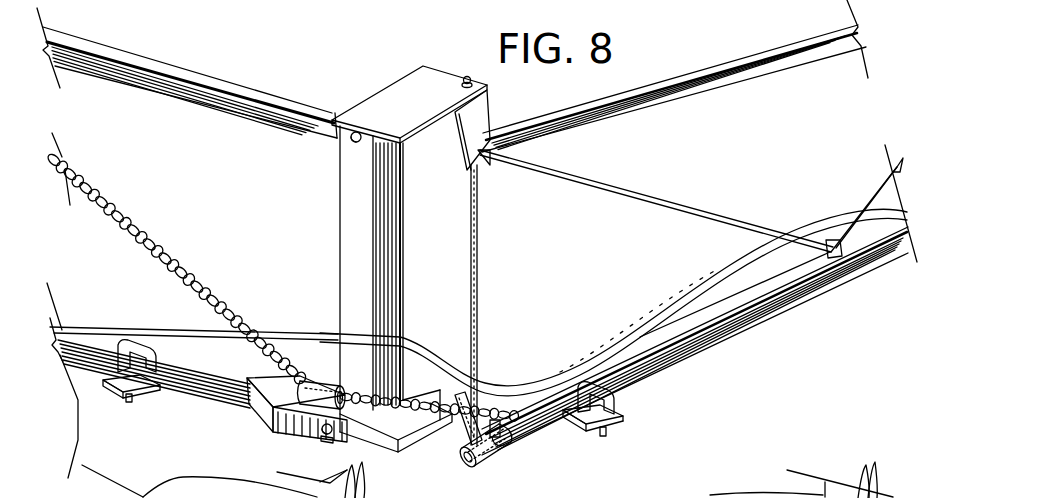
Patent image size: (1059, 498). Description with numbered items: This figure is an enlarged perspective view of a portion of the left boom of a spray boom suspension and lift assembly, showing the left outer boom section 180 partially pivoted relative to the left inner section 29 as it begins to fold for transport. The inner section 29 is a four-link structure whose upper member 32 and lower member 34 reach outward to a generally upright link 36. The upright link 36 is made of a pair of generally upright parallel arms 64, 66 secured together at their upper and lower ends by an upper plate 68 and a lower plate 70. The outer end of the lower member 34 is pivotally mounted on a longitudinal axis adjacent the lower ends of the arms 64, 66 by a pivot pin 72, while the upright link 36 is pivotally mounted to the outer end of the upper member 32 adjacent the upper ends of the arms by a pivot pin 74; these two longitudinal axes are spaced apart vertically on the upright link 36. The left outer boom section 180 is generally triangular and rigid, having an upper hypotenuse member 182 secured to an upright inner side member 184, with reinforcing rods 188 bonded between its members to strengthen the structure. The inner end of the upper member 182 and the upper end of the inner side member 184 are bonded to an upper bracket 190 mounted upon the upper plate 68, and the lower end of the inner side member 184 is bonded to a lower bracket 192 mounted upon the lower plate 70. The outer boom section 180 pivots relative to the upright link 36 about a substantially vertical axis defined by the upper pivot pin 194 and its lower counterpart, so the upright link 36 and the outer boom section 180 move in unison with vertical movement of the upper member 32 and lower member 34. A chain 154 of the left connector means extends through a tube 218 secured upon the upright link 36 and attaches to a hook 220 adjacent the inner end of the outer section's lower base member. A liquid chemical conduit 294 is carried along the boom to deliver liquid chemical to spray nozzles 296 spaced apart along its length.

The left inner section 29 is at (192, 398).
The upper member 32 is at (195, 85).
The lower member 34 is at (93, 362).
The upright link 36 is at (326, 234).
The parallel arm 64 is at (342, 266).
The parallel arm 66 is at (385, 249).
The upper plate 68 is at (385, 105).
The lower plate 70 is at (398, 442).
The pivot pin 72 is at (333, 440).
The pivot pin 74 is at (351, 138).
The chain 154 is at (180, 263).
The left outer boom section 180 is at (808, 314).
The upper hypotenuse member 182 is at (778, 63).
The upright inner side member 184 is at (490, 233).
The reinforcing rods 188 is at (745, 212).
The upper bracket 190 is at (483, 118).
The lower bracket 192 is at (460, 452).
The upper pivot pin 194 is at (467, 77).
The tube 218 is at (317, 399).
The hook 220 is at (515, 430).
The liquid chemical conduit 294 is at (683, 293).
The spray nozzles 296 is at (126, 402).